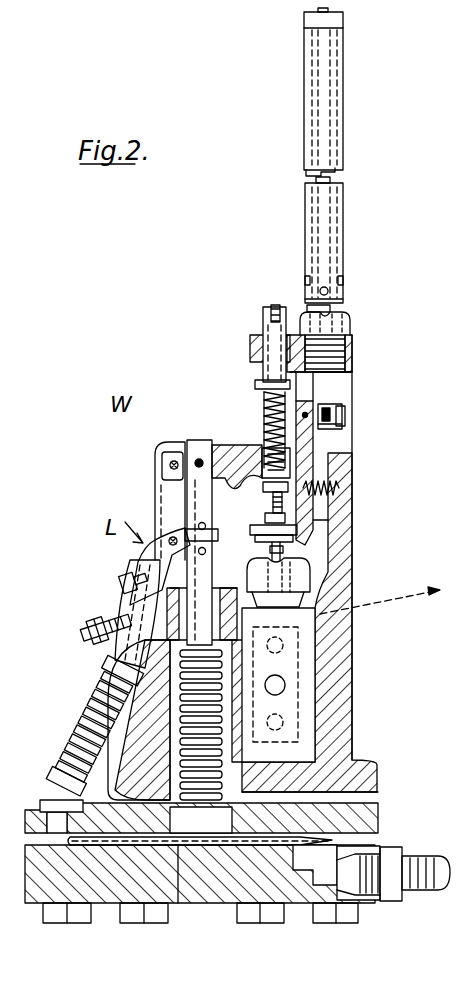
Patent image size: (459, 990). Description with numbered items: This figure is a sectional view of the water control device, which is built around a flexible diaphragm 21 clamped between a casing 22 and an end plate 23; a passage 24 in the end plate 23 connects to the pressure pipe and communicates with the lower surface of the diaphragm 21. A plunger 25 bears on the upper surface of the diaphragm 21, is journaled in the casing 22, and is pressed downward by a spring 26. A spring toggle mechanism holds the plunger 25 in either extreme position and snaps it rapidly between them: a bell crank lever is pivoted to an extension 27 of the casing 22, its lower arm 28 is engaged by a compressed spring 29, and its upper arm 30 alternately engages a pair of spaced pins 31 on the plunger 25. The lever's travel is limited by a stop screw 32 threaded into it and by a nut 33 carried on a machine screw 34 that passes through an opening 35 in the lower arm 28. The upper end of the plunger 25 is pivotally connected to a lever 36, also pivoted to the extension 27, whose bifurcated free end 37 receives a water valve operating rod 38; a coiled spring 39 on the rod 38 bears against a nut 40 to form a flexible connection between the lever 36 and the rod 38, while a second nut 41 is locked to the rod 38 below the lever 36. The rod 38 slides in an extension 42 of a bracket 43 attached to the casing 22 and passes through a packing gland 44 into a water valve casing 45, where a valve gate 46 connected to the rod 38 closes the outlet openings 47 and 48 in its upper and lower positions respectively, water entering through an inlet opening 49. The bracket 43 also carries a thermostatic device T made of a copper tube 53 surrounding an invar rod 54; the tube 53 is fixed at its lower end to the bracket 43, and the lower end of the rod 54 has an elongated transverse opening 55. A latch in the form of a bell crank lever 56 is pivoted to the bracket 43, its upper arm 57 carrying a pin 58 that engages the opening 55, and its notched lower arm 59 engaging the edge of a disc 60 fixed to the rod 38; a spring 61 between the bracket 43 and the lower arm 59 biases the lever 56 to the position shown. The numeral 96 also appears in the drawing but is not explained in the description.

The flexible diaphragm 21 is at (178, 852).
The casing 22 is at (380, 816).
The end plate 23 is at (222, 905).
The passage 24 is at (312, 878).
The plunger 25 is at (180, 765).
The spring 26 is at (185, 690).
The extension 27 is at (155, 492).
The lower arm 28 is at (115, 660).
The compressed spring 29 is at (82, 740).
The upper arm 30 is at (218, 537).
The pins 31 is at (205, 523).
The stop screw 32 is at (155, 555).
The nut 33 is at (80, 620).
The machine screw 34 is at (118, 615).
The opening 35 is at (120, 580).
The lever 36 is at (226, 445).
The bifurcated free end 37 is at (265, 474).
The water valve operating rod 38 is at (300, 452).
The coiled spring 39 is at (263, 433).
The nut 40 is at (256, 385).
The second nut 41 is at (272, 502).
The extension 42 is at (250, 342).
The bracket 43 is at (353, 566).
The packing gland 44 is at (248, 578).
The water valve casing 45 is at (300, 614).
The valve gate 46 is at (322, 690).
The outlet opening 47 is at (300, 637).
The outlet opening 48 is at (322, 718).
The inlet opening 49 is at (242, 704).
The tube 53 is at (345, 207).
The rod 54 is at (345, 68).
The elongated transverse opening 55 is at (330, 408).
The bell crank lever 56 is at (297, 402).
The upper arm 57 is at (343, 406).
The pin 58 is at (347, 417).
The lower arm 59 is at (316, 522).
The disc 60 is at (268, 541).
The spring 61 is at (340, 488).
The line 96 is at (438, 345).
The thermostatic device T is at (345, 125).